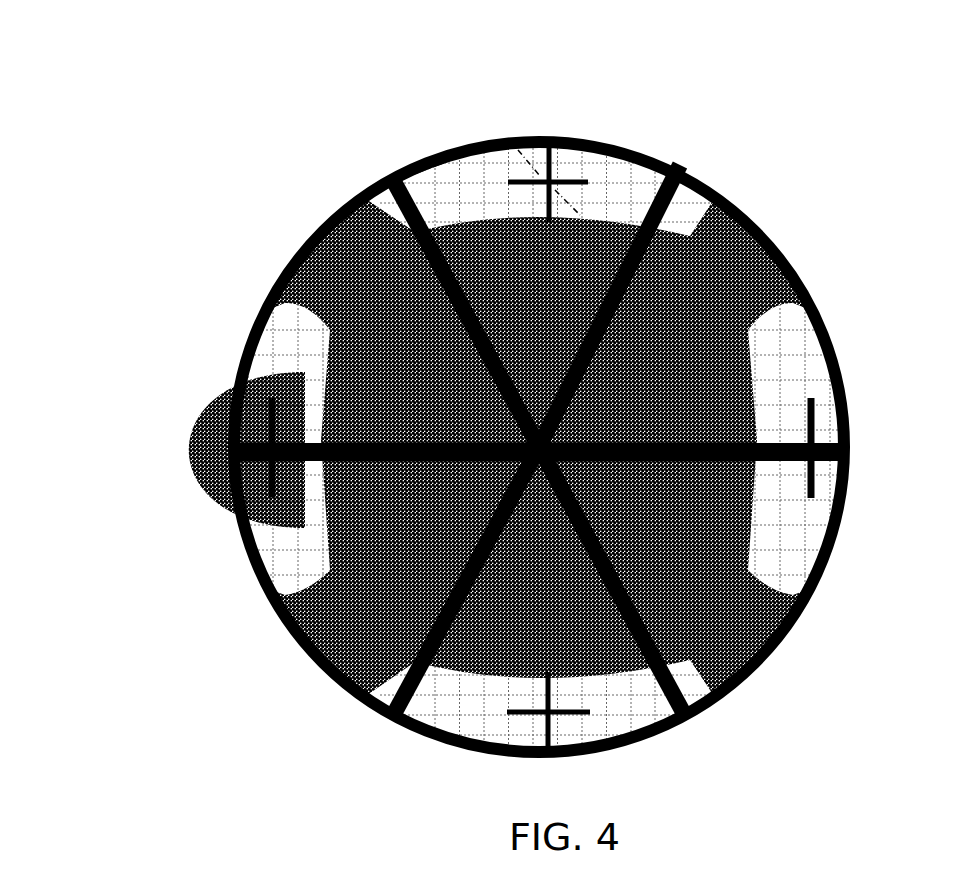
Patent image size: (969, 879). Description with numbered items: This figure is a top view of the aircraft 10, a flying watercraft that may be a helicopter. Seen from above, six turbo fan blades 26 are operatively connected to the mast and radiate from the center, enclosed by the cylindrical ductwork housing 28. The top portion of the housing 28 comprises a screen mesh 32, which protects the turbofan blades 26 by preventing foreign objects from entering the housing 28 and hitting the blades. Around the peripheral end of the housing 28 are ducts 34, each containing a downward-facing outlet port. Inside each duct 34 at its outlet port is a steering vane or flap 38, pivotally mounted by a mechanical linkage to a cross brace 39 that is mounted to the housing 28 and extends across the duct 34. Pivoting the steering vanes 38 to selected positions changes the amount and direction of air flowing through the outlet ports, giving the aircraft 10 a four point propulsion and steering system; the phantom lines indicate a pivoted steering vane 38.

The aircraft 10 is at (126, 113).
The turbo fan blades 26 is at (410, 247).
The ductwork housing 28 is at (353, 193).
The screen mesh 32 is at (308, 597).
The ducts 34 is at (455, 147).
The steering vane 38 is at (589, 181).
The cross brace 39 is at (555, 143).